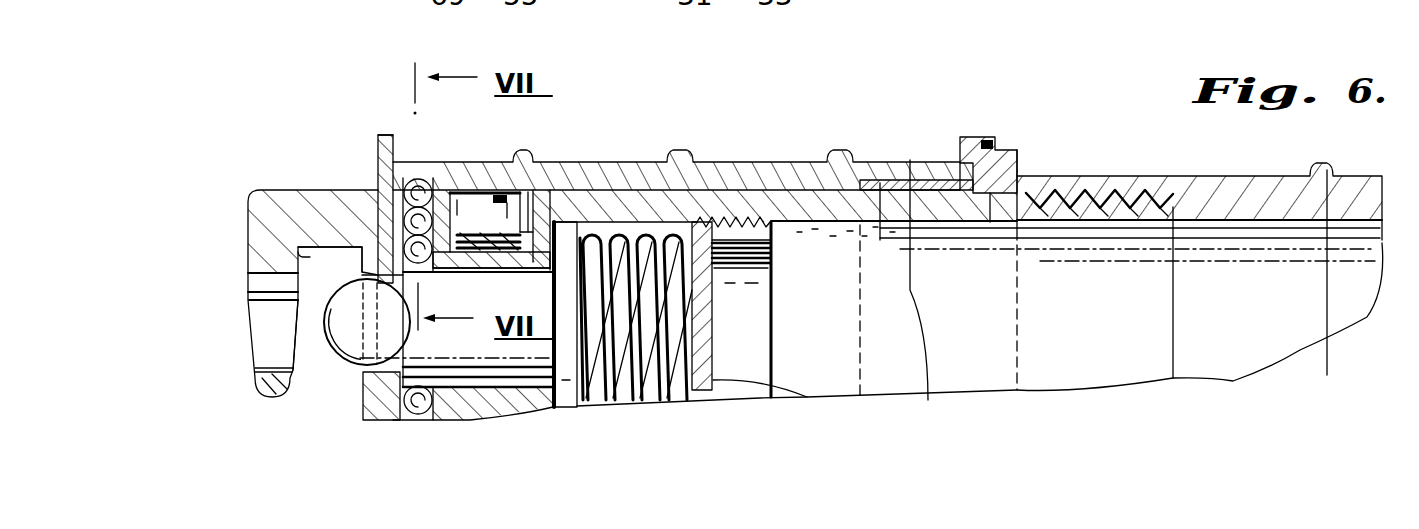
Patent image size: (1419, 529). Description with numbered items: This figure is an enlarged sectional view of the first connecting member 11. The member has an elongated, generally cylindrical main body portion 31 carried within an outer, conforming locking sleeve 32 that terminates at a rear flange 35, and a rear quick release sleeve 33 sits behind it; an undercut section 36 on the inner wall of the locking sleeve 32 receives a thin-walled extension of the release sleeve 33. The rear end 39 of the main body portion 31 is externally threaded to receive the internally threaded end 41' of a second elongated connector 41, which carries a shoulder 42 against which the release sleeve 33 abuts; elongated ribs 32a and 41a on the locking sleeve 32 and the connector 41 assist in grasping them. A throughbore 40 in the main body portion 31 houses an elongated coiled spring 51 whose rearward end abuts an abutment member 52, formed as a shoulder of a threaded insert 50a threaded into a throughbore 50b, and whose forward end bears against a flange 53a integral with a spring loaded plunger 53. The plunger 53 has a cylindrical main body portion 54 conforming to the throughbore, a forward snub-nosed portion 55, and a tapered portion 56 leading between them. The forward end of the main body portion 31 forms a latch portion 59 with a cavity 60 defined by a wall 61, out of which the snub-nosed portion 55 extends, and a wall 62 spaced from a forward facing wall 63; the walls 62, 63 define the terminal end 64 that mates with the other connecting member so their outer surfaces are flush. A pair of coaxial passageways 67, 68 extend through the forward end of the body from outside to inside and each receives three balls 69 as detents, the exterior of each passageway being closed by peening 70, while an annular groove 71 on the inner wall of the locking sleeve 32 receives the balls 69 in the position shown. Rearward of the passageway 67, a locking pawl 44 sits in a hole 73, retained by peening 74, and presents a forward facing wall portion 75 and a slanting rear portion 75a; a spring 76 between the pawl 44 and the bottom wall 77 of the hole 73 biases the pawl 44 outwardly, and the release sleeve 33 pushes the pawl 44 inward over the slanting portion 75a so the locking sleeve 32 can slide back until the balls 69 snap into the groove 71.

The first connecting member 11 is at (1010, 124).
The main body portion 31 is at (721, 200).
The locking sleeve 32 is at (777, 163).
The elongated ribs 32a is at (835, 153).
The rear quick release sleeve 33 is at (910, 168).
The rear flange 35 is at (977, 137).
The undercut section 36 is at (868, 238).
The rear end 39 is at (1120, 210).
The throughbore 40 is at (595, 410).
The second elongated connector 41 is at (1218, 187).
The internally threaded end 41' is at (1100, 170).
The elongated ribs 41a is at (1336, 291).
The shoulder 42 is at (990, 225).
The locking pawl 44 is at (503, 207).
The threaded insert 50a is at (773, 266).
The throughbore 50b is at (928, 400).
The coiled spring 51 is at (673, 405).
The abutment member 52 is at (775, 388).
The spring loaded plunger 53 is at (316, 330).
The flange 53a is at (567, 400).
The main body portion 54 is at (493, 382).
The snub-nosed portion 55 is at (350, 355).
The tapered portion 56 is at (440, 347).
The latch portion 59 is at (228, 197).
The cavity 60 is at (293, 252).
The wall 61 is at (353, 267).
The wall 62 is at (290, 393).
The forward facing wall 63 is at (247, 262).
The terminal end 64 is at (242, 392).
The passageway 67 is at (400, 218).
The passageway 68 is at (423, 420).
The balls 69 is at (410, 406).
The peening 70 is at (438, 160).
The annular groove 71 is at (388, 205).
The hole 73 is at (537, 217).
The peening 74 is at (528, 195).
The forward facing wall portion 75 is at (470, 191).
The slanting rear portion 75a is at (527, 215).
The spring 76 is at (503, 254).
The bottom wall 77 is at (473, 254).